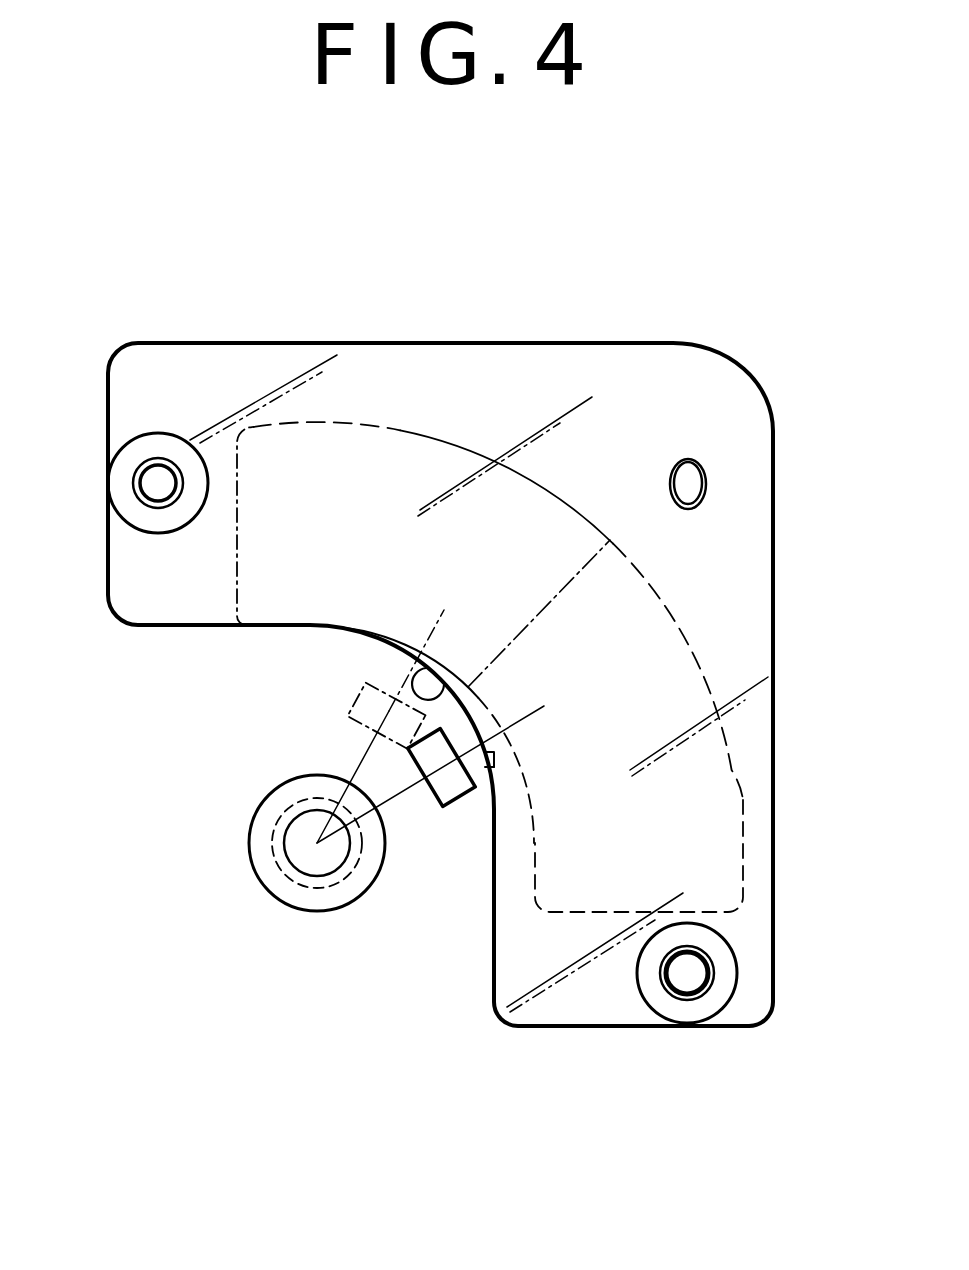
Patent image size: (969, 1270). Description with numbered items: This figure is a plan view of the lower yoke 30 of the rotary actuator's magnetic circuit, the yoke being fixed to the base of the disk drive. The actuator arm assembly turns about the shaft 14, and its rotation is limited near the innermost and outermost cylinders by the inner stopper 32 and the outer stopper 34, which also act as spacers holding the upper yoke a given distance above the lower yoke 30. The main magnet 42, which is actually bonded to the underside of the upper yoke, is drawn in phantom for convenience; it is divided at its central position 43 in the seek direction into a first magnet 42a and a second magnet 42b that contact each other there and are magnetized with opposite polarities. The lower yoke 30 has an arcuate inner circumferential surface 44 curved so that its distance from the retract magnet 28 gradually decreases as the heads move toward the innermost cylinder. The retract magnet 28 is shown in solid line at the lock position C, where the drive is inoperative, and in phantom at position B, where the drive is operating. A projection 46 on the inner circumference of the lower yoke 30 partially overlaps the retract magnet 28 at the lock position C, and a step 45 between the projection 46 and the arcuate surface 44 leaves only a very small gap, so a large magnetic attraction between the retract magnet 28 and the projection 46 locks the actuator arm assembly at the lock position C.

The shaft 14 is at (307, 862).
The retract magnet 28 is at (348, 715).
The lower yoke 30 is at (665, 343).
The inner stopper 32 is at (665, 1013).
The outer stopper 34 is at (120, 484).
The main magnet 42 is at (686, 624).
The first magnet 42a is at (720, 724).
The second magnet 42b is at (342, 423).
The central position 43 is at (578, 572).
The arcuate inner circumferential surface 44 is at (415, 667).
The step 45 is at (494, 753).
The projection 46 is at (483, 789).
The position B is at (395, 711).
The lock position C is at (447, 757).